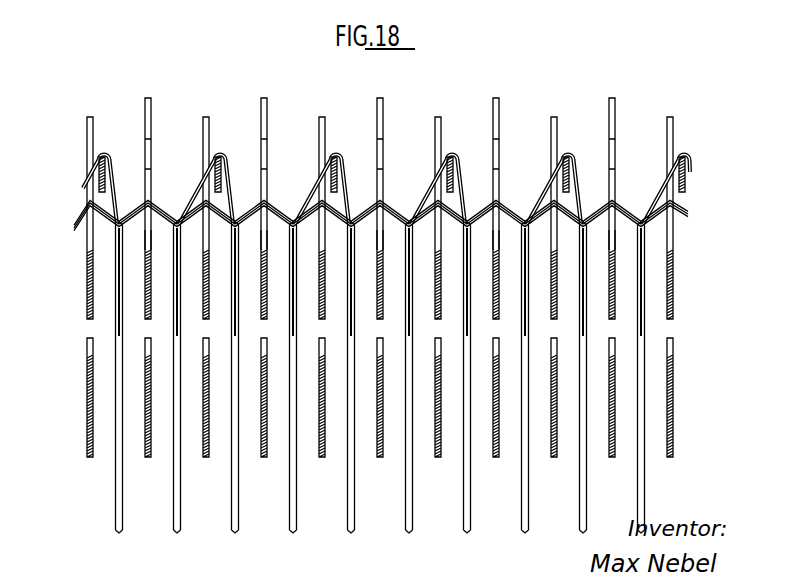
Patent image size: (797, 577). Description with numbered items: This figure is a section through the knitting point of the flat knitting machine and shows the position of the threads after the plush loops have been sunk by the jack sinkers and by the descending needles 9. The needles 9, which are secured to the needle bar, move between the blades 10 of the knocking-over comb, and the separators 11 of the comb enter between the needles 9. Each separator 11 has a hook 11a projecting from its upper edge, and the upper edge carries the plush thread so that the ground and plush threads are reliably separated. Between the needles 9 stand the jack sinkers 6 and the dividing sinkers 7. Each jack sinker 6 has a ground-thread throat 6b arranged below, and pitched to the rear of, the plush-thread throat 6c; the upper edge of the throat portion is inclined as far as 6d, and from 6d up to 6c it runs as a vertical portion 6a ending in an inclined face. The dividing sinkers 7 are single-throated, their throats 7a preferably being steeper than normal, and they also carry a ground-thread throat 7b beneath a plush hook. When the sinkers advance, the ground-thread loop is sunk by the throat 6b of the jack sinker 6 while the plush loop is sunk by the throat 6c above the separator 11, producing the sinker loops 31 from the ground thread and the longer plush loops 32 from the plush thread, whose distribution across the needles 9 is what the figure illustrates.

The jack sinker 6 is at (151, 240).
The vertical portion 6a is at (149, 150).
The ground-thread throat 6b is at (151, 200).
The plush-thread throat 6c is at (150, 139).
The end point of inclined throat edge 6d is at (149, 172).
The dividing sinker 7 is at (92, 240).
The throat of dividing sinker 7a is at (320, 158).
The ground-thread throat of dividing sinker 7b is at (327, 205).
The needle 9 is at (123, 473).
The blade of knocking-over comb 10 is at (157, 447).
The separator 11 is at (386, 139).
The hook of separator 11a is at (215, 158).
The sinker loop 31 is at (76, 224).
The plush loop 32 is at (106, 157).